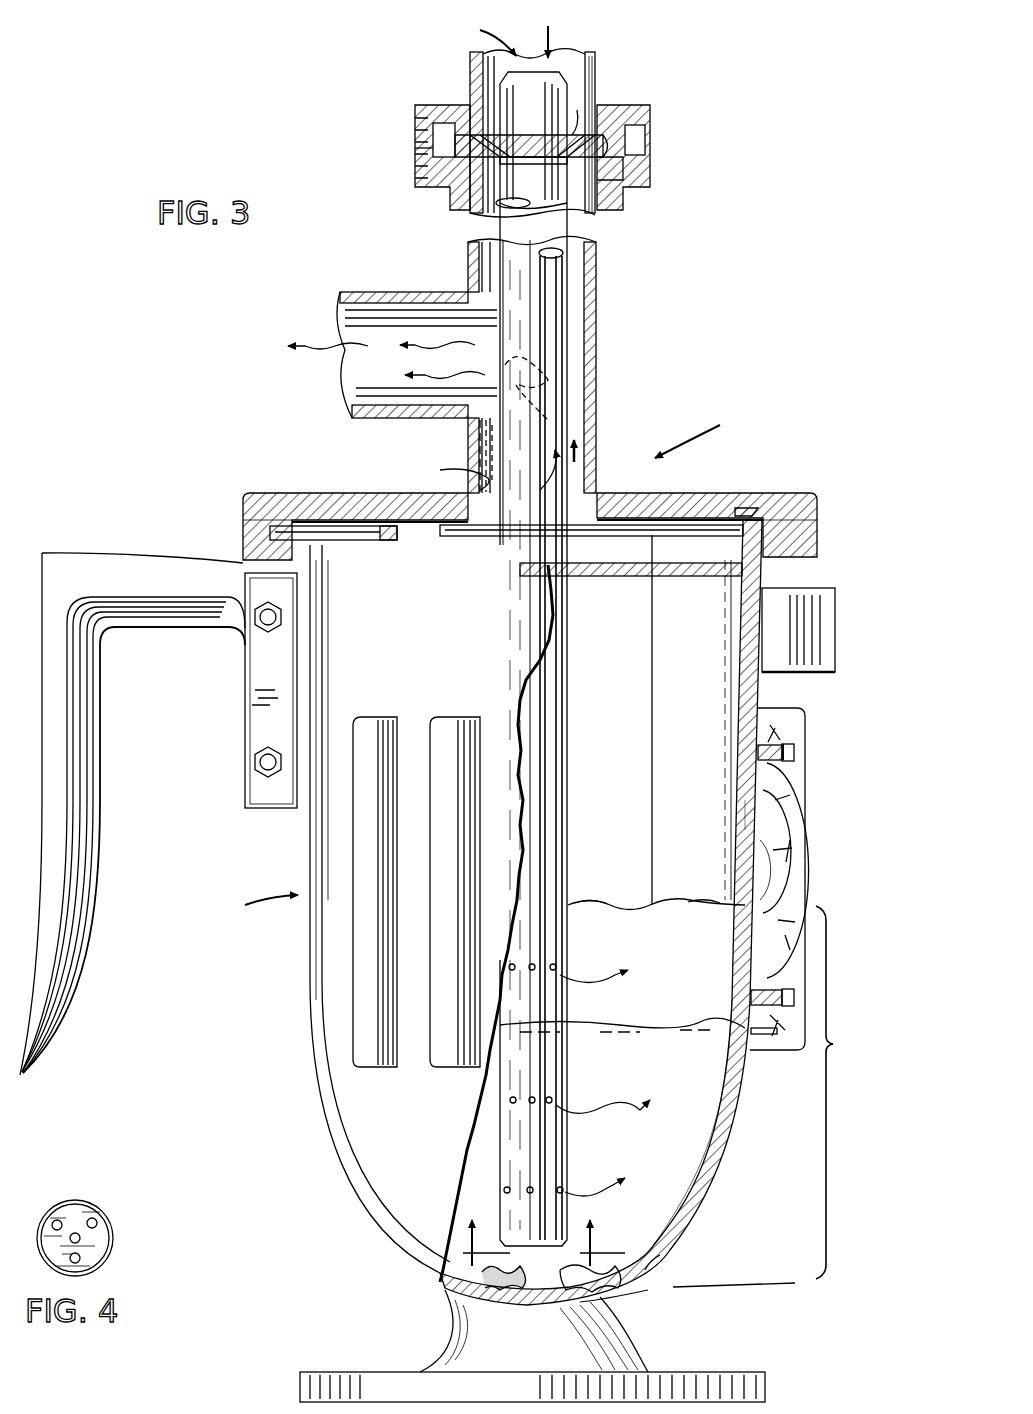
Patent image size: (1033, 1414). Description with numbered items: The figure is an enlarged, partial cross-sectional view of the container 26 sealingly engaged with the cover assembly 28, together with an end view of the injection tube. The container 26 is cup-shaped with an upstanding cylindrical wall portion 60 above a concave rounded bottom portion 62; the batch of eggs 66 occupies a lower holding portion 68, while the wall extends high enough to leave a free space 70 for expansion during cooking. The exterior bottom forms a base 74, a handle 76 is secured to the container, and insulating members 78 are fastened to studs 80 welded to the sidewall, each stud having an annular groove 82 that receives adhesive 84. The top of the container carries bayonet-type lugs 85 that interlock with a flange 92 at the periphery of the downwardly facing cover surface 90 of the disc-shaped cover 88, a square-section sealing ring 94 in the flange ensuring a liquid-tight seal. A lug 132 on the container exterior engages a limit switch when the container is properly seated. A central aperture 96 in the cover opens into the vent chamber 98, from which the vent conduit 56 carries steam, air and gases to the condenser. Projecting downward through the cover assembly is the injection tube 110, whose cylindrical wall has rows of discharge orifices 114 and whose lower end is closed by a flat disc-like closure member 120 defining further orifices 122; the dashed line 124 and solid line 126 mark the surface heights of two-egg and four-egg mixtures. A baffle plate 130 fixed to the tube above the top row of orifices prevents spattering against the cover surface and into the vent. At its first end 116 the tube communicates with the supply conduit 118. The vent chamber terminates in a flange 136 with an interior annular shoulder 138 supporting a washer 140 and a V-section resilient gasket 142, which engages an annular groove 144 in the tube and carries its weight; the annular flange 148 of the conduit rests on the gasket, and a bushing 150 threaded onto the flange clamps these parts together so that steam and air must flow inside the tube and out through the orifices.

In FIG. 3, the container 26 is at (486, 912).
In FIG. 3, the cover assembly 28 is at (688, 430).
In FIG. 3, the vent conduit 56 is at (375, 292).
In FIG. 3, the cylindrical wall portion 60 is at (745, 810).
In FIG. 3, the bottom portion 62 is at (640, 1250).
In FIG. 3, the batch of eggs 66 is at (705, 1100).
In FIG. 3, the lower holding portion 68 is at (838, 1052).
In FIG. 3, the free space 70 is at (655, 708).
In FIG. 3, the base 74 is at (697, 1372).
In FIG. 3, the handle 76 is at (110, 562).
In FIG. 3, the insulating members 78 is at (436, 1067).
In FIG. 3, the studs 80 is at (794, 752).
In FIG. 3, the annular groove 82 is at (781, 744).
In FIG. 3, the adhesive 84 is at (790, 1000).
In FIG. 3, the bayonet-type lugs 85 is at (350, 540).
In FIG. 3, the cover 88 is at (675, 493).
In FIG. 3, the cover surface 90 is at (740, 568).
In FIG. 3, the flange 92 is at (265, 545).
In FIG. 3, the sealing ring 94 is at (760, 506).
In FIG. 3, the aperture 96 is at (453, 456).
In FIG. 3, the vent chamber 98 is at (590, 296).
In FIG. 3, the injection tube 110 is at (567, 795).
In FIG. 3, the discharge orifices 114 is at (556, 967).
In FIG. 3, the first end 116 is at (567, 84).
In FIG. 3, the conduit 118 is at (590, 68).
In FIG. 3, the closure member 120 is at (609, 1256).
In FIG. 4, the closure member 120 is at (98, 1256).
In FIG. 4, the orifices 122 is at (80, 1258).
In FIG. 3, the dashed line 124 is at (610, 1025).
In FIG. 3, the solid line 126 is at (668, 903).
In FIG. 3, the baffle plate 130 is at (603, 577).
In FIG. 3, the lug 132 is at (795, 592).
In FIG. 3, the flange 136 is at (630, 190).
In FIG. 3, the annular shoulder 138 is at (600, 148).
In FIG. 3, the washer 140 is at (625, 170).
In FIG. 3, the gasket 142 is at (577, 112).
In FIG. 3, the annular groove 144 is at (530, 156).
In FIG. 3, the annular flange 148 is at (606, 135).
In FIG. 3, the bushing 150 is at (415, 150).